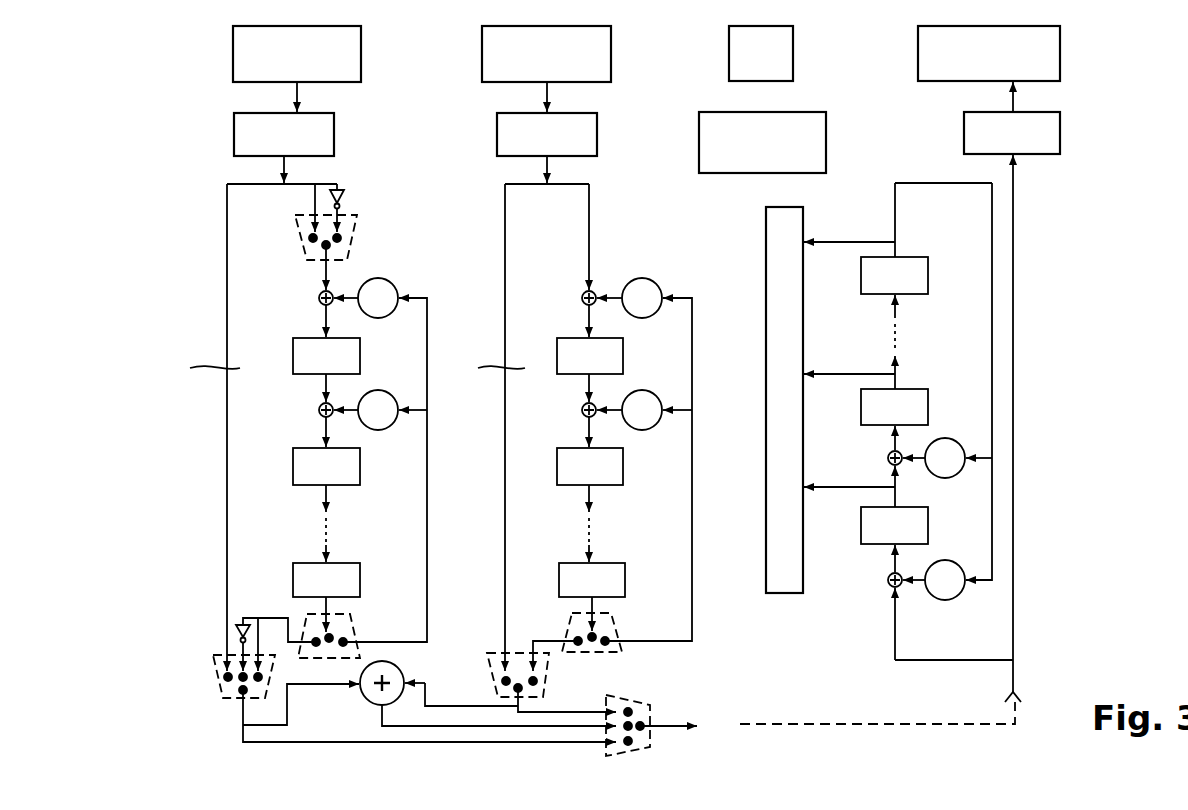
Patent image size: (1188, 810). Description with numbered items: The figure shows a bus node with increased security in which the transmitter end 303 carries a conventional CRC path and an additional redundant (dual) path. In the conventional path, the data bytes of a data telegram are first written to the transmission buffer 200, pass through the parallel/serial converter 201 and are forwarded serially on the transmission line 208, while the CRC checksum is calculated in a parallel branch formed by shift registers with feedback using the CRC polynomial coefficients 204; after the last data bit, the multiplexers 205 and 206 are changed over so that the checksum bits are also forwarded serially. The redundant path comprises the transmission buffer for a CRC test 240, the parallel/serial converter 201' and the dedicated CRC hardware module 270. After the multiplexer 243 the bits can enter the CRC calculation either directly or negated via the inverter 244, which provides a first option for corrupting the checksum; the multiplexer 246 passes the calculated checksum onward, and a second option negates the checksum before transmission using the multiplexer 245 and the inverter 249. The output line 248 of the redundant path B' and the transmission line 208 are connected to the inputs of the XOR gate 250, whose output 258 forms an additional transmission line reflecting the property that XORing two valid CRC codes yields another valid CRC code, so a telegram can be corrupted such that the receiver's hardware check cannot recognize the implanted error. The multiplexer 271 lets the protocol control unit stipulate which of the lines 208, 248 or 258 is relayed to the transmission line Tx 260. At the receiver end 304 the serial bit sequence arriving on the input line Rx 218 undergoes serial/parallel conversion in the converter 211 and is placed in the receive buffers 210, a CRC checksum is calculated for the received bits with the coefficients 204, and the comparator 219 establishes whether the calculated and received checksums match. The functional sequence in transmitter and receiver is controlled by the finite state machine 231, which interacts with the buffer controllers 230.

The transmission buffer 200 is at (482, 50).
The parallel/serial converter 201 is at (501, 134).
The parallel/serial converter 201' is at (236, 134).
The CRC polynomial coefficients 204 is at (385, 284).
The multiplexer 205 is at (506, 660).
The multiplexer 206 is at (622, 650).
The transmission line TX 208 is at (553, 710).
The receive buffers 210 is at (1060, 50).
The serial/parallel converter 211 is at (1060, 135).
The input line Rx 218 is at (1015, 637).
The comparator 219 is at (783, 598).
The buffer controllers 230 is at (729, 50).
The finite state machine 231 is at (826, 125).
The transmission buffer for a CRC test 240 is at (233, 50).
The multiplexer 243 is at (310, 255).
The inverter 244 is at (338, 183).
The multiplexer 245 is at (218, 672).
The multiplexer 246 is at (350, 640).
The output line of the redundant CRC calculation path 248 is at (243, 733).
The inverter 249 is at (243, 620).
The XOR gate 250 is at (395, 668).
The output of the XOR gate 258 is at (382, 716).
The transmission line Tx 260 is at (668, 733).
The dedicated CRC hardware module 270 is at (437, 292).
The multiplexer 271 is at (650, 706).
The transmitter end 303 is at (200, 337).
The receiver end 304 is at (1030, 337).